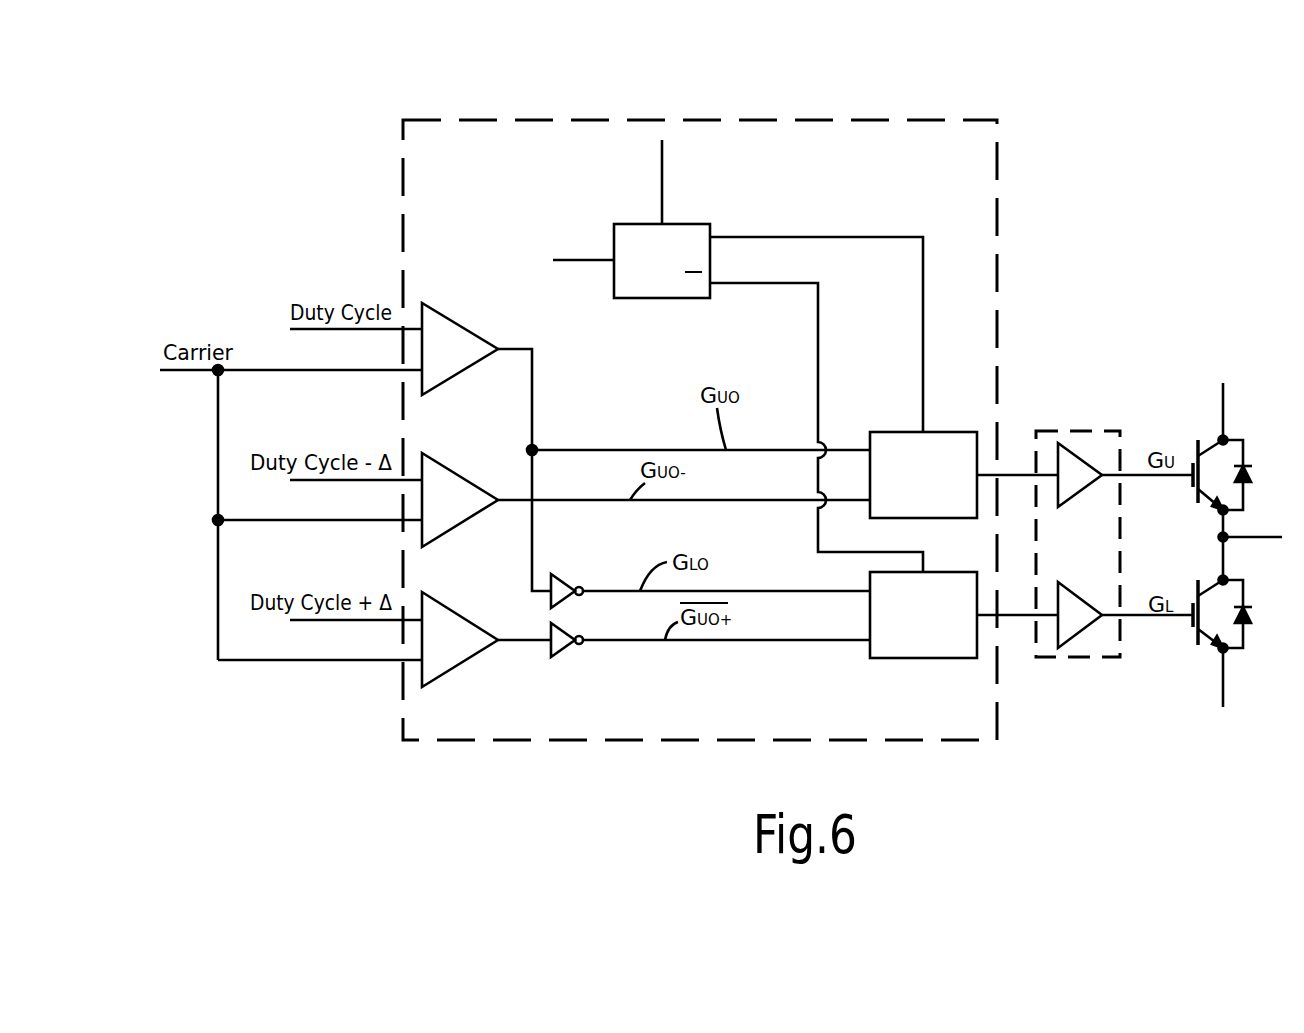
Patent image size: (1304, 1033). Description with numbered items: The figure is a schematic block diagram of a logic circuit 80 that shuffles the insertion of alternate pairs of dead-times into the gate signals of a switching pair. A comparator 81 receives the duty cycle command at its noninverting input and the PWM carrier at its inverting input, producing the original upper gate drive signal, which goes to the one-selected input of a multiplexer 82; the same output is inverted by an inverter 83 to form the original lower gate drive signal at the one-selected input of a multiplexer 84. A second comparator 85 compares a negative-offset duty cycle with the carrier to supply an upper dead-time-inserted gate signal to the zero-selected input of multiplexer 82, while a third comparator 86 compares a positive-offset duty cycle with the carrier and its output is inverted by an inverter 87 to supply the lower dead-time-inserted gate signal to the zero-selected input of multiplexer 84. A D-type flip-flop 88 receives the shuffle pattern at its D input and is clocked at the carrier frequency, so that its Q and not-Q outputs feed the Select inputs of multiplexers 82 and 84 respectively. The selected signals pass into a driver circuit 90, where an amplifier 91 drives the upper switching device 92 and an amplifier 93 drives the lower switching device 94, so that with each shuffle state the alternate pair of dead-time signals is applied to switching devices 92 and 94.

The logic circuit 80 is at (910, 120).
The comparator 81 is at (449, 320).
The multiplexer 82 is at (902, 432).
The inverter 83 is at (564, 583).
The multiplexer 84 is at (900, 658).
The comparator 85 is at (462, 477).
The comparator 86 is at (455, 613).
The inverter 87 is at (548, 650).
The D-type flip-flop 88 is at (637, 222).
The driver circuit 90 is at (1063, 431).
The amplifier 91 is at (1085, 462).
The switching device 92 is at (1196, 490).
The amplifier 93 is at (1085, 628).
The switching device 94 is at (1198, 637).